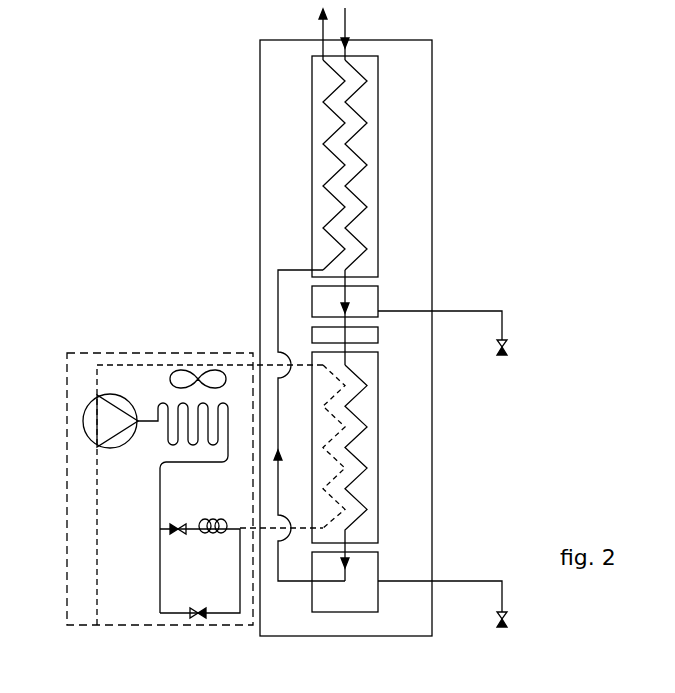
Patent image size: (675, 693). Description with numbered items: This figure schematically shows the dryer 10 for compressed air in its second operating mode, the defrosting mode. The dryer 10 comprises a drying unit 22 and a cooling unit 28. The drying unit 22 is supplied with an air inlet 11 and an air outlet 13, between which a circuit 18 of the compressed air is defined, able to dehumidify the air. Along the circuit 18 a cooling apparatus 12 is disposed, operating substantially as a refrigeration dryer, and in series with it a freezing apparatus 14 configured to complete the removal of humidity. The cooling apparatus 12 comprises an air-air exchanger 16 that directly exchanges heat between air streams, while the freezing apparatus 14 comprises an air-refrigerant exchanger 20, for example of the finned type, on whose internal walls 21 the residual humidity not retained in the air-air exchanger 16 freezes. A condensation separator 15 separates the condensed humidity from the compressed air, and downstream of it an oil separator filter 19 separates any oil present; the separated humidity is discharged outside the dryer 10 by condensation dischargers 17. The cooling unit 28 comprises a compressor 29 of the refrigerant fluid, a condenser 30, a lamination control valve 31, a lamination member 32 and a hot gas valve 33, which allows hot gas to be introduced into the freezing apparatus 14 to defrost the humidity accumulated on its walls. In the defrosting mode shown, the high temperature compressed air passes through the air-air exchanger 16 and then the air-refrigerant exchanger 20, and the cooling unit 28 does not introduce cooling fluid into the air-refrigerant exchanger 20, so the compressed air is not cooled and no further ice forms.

The dryer 10 is at (567, 176).
The air inlet 11 is at (345, 40).
The cooling apparatus 12 is at (394, 173).
The air outlet 13 is at (323, 40).
The freezing apparatus 14 is at (395, 438).
The condensation separator 15 is at (378, 298).
The air-air exchanger 16 is at (378, 102).
The condensation discharger 17 is at (506, 352).
The circuit 18 is at (295, 581).
The oil separator filter 19 is at (312, 334).
The air-refrigerant exchanger 20 is at (378, 492).
The internal walls 21 is at (378, 413).
The drying unit 22 is at (434, 140).
The cooling unit 28 is at (65, 519).
The compressor 29 is at (83, 410).
The condenser 30 is at (163, 403).
The lamination control valve 31 is at (177, 524).
The lamination member 32 is at (213, 519).
The hot gas valve 33 is at (200, 617).